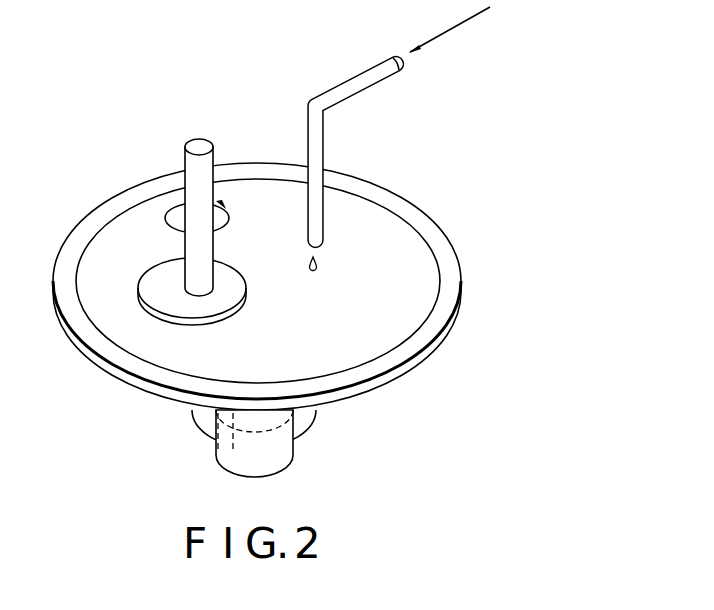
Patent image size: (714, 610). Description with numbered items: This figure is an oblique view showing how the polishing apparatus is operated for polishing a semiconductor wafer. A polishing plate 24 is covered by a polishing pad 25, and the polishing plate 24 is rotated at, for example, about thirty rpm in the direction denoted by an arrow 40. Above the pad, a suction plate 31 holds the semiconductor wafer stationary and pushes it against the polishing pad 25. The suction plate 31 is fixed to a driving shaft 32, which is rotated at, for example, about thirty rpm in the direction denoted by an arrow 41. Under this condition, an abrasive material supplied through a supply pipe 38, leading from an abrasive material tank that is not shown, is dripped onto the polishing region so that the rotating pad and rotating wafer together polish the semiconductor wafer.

The polishing plate 24 is at (362, 390).
The polishing pad 25 is at (157, 356).
The suction plate 31 is at (230, 285).
The driving shaft 32 is at (184, 166).
The supply pipe 38 is at (320, 100).
The arrow 40 is at (305, 436).
The arrow 41 is at (230, 217).